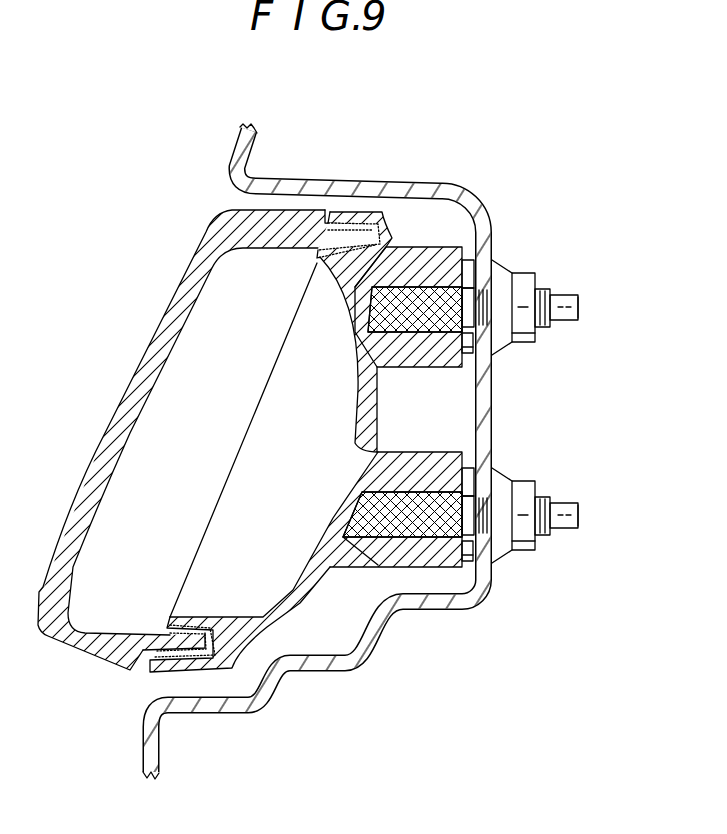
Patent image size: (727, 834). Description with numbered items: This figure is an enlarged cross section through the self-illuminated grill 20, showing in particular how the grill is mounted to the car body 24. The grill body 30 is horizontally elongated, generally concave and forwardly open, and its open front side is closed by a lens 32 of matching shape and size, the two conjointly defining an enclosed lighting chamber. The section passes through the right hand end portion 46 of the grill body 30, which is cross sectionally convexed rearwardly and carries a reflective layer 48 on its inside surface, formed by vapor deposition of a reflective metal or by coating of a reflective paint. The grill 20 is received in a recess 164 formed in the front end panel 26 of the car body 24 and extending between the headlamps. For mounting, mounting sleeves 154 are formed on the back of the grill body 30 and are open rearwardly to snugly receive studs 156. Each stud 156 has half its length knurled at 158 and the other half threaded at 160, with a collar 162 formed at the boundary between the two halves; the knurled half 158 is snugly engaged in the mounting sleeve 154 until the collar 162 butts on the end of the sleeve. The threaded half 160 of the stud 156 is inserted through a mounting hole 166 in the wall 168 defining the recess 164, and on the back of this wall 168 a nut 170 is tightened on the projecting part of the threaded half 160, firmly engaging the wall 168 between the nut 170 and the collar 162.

The self-illuminated grill 20 is at (110, 212).
The car body 24 is at (230, 154).
The front end panel 26 is at (238, 128).
The grill body 30 is at (316, 590).
The lens 32 is at (150, 333).
The right hand end portion 46 is at (362, 370).
The reflective layer 48 is at (360, 417).
The mounting sleeve 154 is at (432, 247).
The stud 156 is at (580, 311).
The knurled half 158 is at (397, 332).
The threaded half 160 is at (552, 295).
The collar 162 is at (470, 262).
The recess 164 is at (277, 200).
The mounting hole 166 is at (497, 322).
The wall 168 is at (524, 274).
The nut 170 is at (538, 289).